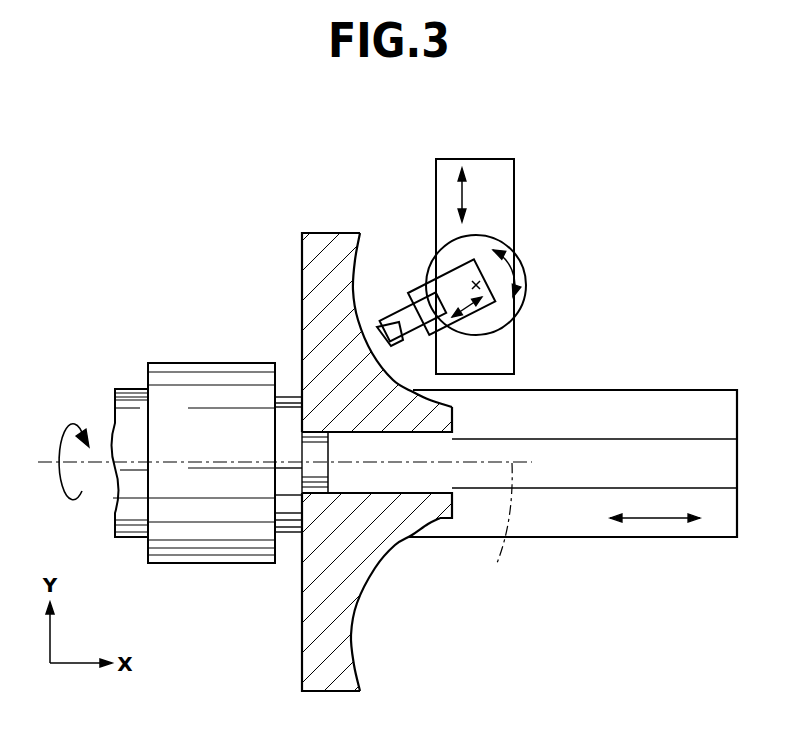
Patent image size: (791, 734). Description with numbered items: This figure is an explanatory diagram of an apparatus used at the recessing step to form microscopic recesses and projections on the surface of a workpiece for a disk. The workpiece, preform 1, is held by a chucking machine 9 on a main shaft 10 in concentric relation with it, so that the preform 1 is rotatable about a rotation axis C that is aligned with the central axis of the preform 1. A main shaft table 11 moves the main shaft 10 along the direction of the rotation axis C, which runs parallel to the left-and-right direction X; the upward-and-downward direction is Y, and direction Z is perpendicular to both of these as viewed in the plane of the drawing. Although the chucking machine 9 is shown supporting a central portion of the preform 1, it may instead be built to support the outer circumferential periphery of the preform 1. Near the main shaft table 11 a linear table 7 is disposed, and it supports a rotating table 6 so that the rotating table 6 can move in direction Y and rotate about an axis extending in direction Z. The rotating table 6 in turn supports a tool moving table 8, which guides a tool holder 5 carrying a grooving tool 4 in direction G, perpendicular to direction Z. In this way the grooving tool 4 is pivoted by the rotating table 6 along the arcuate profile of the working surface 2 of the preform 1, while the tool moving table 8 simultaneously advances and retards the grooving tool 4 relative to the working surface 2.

The preform 1 is at (395, 367).
The working surface 2 is at (377, 566).
The grooving tool 4 is at (380, 334).
The tool holder 5 is at (405, 308).
The rotating table 6 is at (518, 262).
The linear table 7 is at (494, 188).
The tool moving table 8 is at (470, 272).
The chucking machine 9 is at (193, 377).
The main shaft 10 is at (130, 387).
The main shaft table 11 is at (632, 400).
The direction Z is at (473, 284).
The direction G is at (472, 319).
The rotation axis C is at (501, 530).